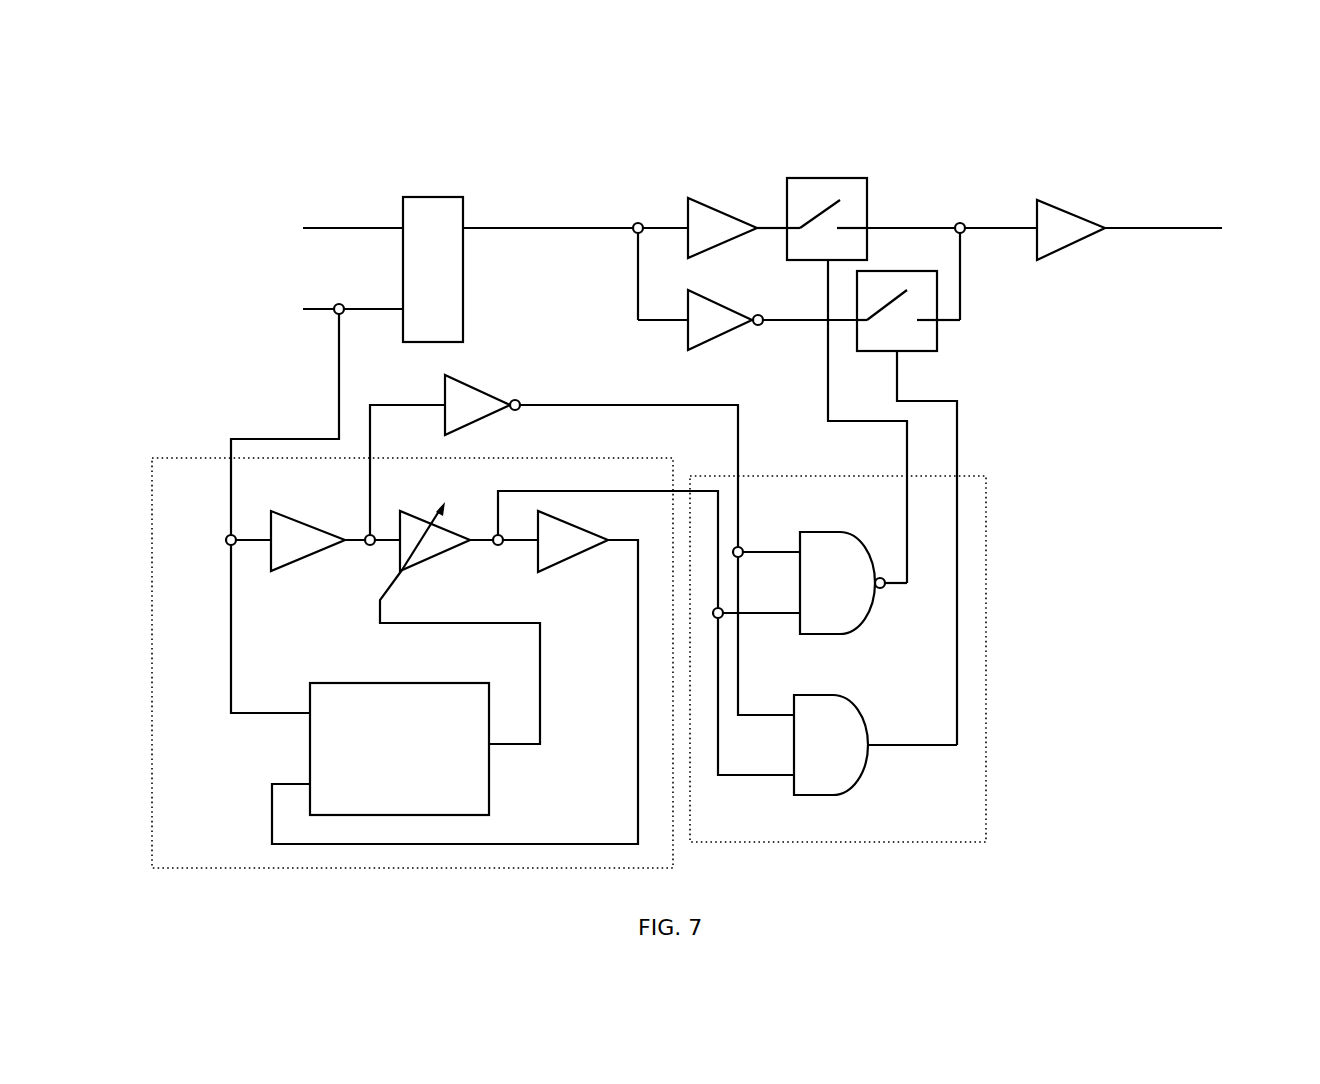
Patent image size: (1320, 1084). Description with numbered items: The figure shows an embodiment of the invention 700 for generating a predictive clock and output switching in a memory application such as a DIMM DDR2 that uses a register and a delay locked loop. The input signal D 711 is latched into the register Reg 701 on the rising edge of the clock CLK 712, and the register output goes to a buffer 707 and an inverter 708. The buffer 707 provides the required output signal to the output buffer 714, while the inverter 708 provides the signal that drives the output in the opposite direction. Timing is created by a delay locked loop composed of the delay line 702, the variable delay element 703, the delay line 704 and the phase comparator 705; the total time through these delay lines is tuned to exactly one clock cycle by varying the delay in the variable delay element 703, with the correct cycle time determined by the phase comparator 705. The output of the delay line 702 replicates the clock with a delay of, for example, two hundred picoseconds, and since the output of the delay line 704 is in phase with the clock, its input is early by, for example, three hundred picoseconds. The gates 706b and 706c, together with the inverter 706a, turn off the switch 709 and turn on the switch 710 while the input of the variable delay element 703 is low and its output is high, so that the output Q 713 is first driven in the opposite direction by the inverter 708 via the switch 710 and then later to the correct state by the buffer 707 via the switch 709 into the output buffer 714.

The embodiment of the invention 700 is at (1118, 97).
The register Reg 701 is at (433, 247).
The delay line 702 is at (302, 522).
The variable delay element 703 is at (460, 607).
The delay line 704 is at (584, 536).
The phase comparator 705 is at (399, 731).
The inverter 706a is at (500, 411).
The buffer (gate) 706b is at (850, 567).
The buffer (gate) 706c is at (875, 764).
The buffer 707 is at (722, 215).
The inverter 708 is at (725, 336).
The switch 709 is at (827, 203).
The switch 710 is at (926, 317).
The input signal D 711 is at (320, 209).
The clock CLK 712 is at (320, 298).
The output Q 713 is at (1182, 207).
The output buffer 714 is at (1071, 211).